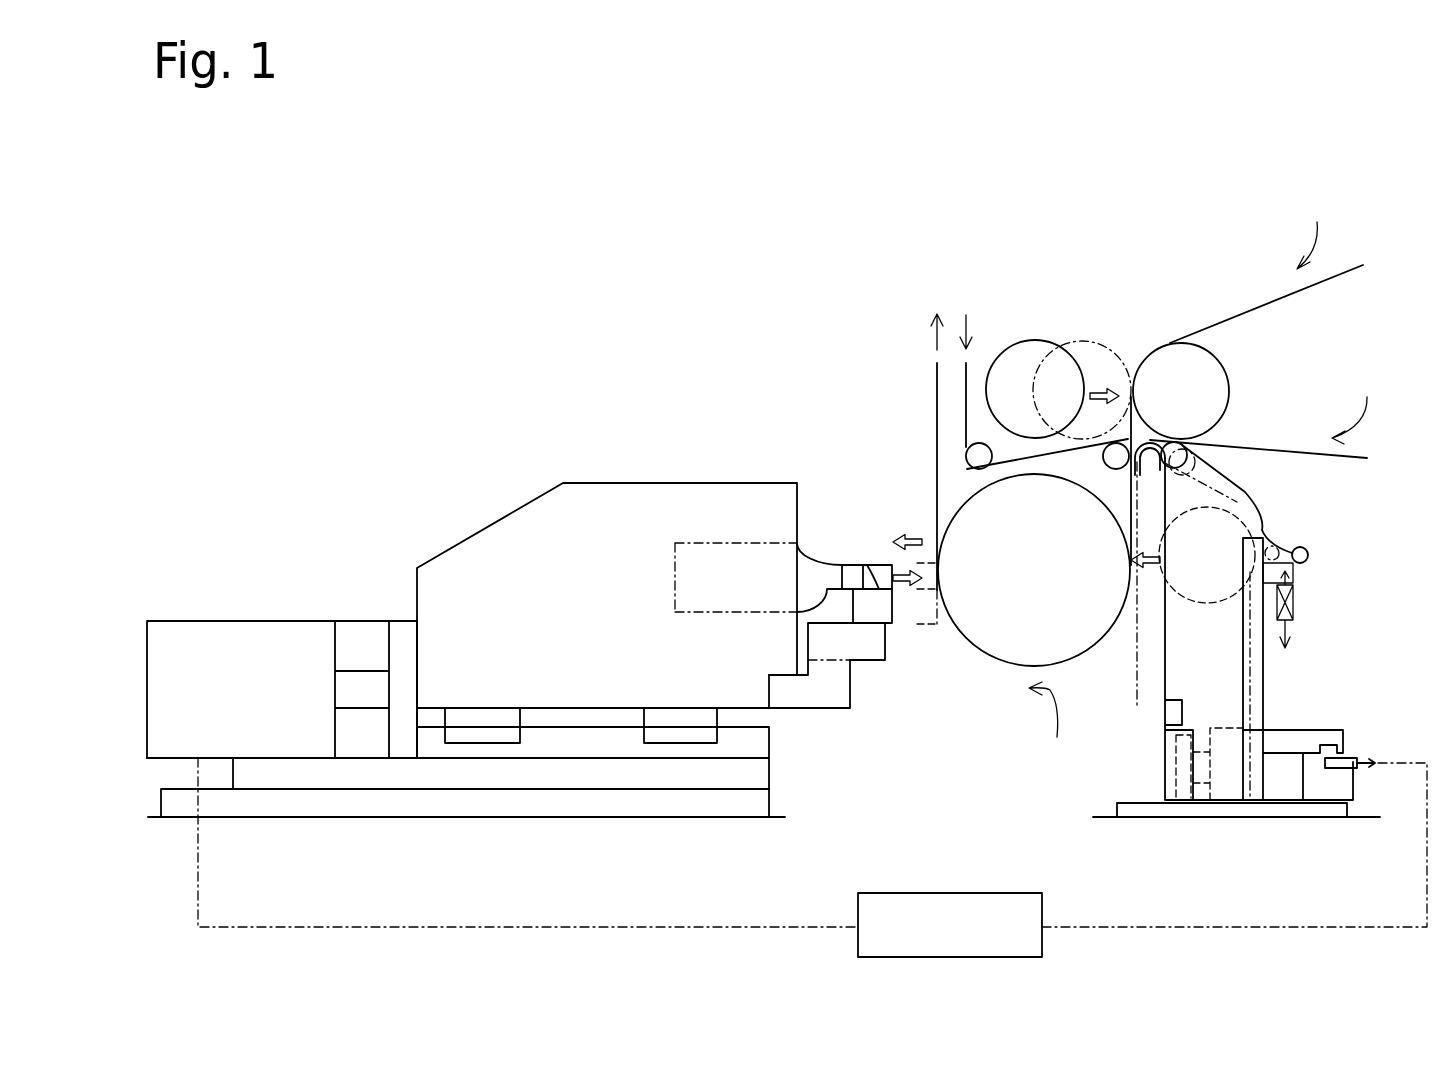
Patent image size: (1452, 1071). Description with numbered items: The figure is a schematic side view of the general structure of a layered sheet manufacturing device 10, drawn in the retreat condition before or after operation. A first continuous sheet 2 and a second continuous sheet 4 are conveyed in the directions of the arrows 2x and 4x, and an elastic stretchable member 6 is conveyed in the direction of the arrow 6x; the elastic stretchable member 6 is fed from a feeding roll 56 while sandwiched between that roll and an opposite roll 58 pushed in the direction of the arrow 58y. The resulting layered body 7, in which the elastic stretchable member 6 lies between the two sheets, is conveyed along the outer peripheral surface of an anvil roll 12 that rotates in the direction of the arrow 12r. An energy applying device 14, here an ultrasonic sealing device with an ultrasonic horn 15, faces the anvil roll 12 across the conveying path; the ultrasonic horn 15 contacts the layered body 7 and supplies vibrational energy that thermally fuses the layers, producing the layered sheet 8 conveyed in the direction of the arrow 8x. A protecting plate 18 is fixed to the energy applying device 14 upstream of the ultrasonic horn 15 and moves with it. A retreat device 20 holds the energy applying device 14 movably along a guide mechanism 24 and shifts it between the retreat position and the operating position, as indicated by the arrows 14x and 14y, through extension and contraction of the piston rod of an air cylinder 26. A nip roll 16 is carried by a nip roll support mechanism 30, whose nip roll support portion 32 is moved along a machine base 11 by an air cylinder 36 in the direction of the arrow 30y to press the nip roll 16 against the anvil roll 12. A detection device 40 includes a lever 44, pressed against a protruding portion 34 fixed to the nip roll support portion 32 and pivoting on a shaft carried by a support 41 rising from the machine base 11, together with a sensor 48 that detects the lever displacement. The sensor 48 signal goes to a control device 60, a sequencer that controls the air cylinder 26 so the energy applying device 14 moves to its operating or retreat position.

The layered sheet manufacturing device 10 is at (452, 224).
The retreat device 20 is at (299, 506).
The air cylinder 26 is at (237, 620).
The energy applying device 14 is at (683, 482).
The ultrasonic horn 15 is at (827, 563).
The protecting plate 18 is at (926, 627).
The arrow indicating movement direction of energy applying device 14x is at (917, 533).
The arrow indicating movement direction of energy applying device 14y is at (901, 570).
The guide mechanism 24 is at (758, 743).
The control device 60 is at (945, 892).
The layered sheet 8 is at (933, 383).
The arrow indicating conveying direction of layered sheet 8x is at (933, 338).
The second continuous sheet 4 is at (970, 377).
The arrow indicating conveying direction of second continuous sheet 4x is at (968, 320).
The opposite roll 58 is at (1090, 347).
The arrow indicating pushing direction of opposite roll 58y is at (1098, 385).
The feeding roll 56 is at (1230, 368).
The elastic stretchable member 6 is at (1255, 305).
The arrow indicating conveying direction of elastic stretchable member 6x is at (1314, 232).
The first continuous sheet 2 is at (1275, 450).
The arrow indicating conveying direction of first continuous sheet 2x is at (1357, 407).
The arrow indicating pressing direction of nip roll 30y is at (1147, 570).
The anvil roll 12 is at (993, 643).
The layered body 7 is at (1012, 667).
The arrow indicating rotation direction of anvil roll 12r is at (1055, 725).
The nip roll support portion 32 is at (1173, 700).
The nip roll 16 is at (1245, 490).
The nip roll support mechanism 30 is at (1350, 555).
The protruding portion 34 is at (1280, 538).
The detection device 40 is at (1347, 654).
The lever 44 is at (1263, 688).
The sensor 48 is at (1320, 778).
The support 41 is at (1265, 783).
The air cylinder 36 is at (1232, 797).
The machine base 11 is at (1160, 808).